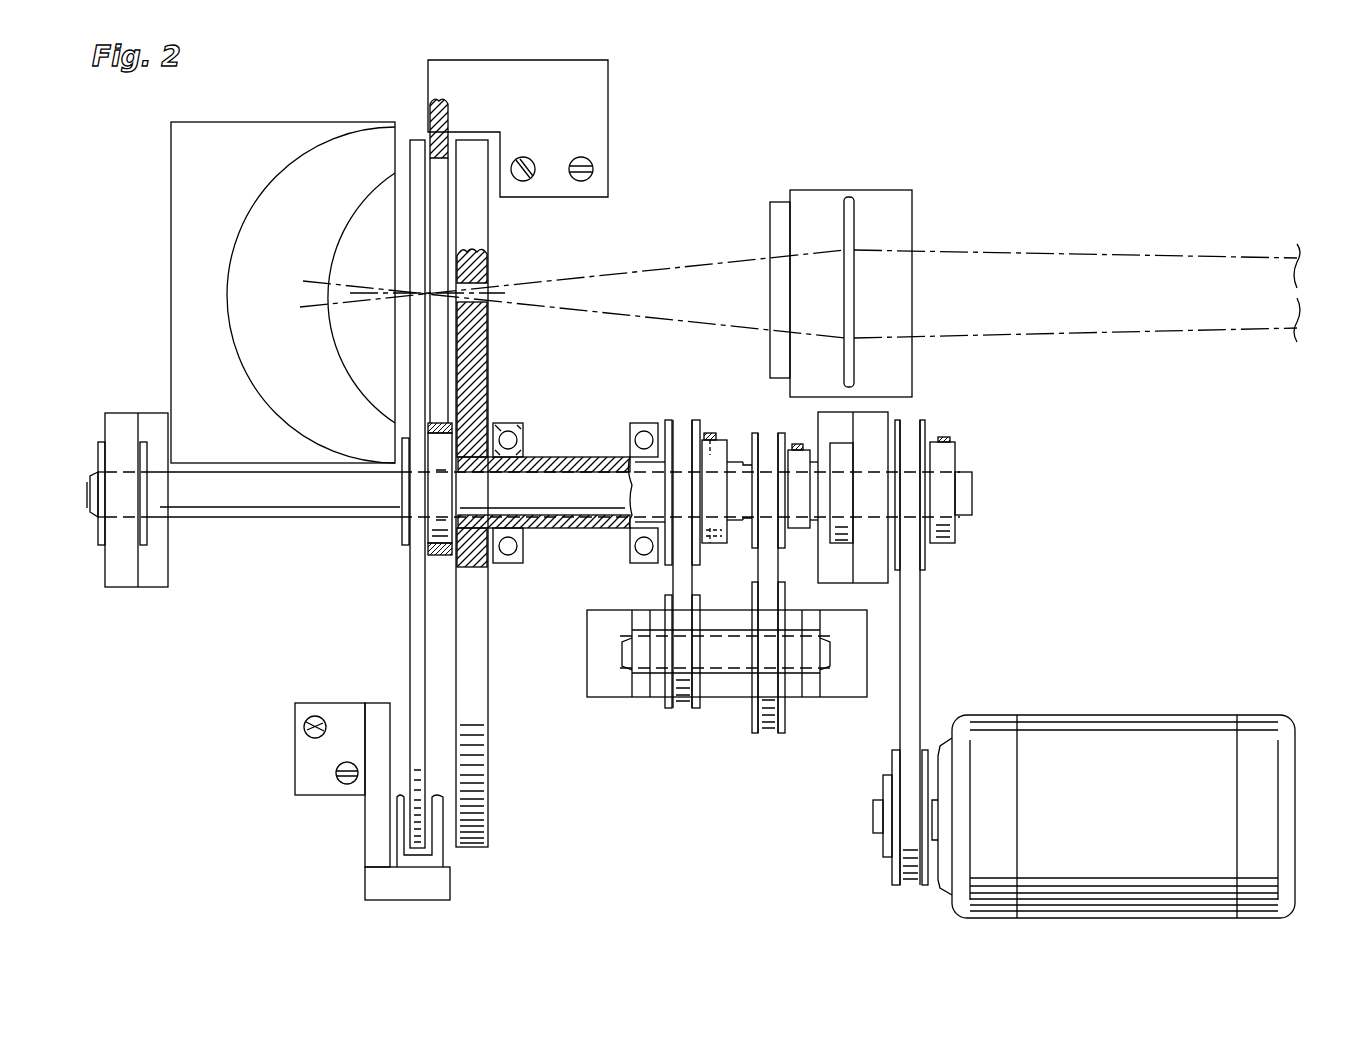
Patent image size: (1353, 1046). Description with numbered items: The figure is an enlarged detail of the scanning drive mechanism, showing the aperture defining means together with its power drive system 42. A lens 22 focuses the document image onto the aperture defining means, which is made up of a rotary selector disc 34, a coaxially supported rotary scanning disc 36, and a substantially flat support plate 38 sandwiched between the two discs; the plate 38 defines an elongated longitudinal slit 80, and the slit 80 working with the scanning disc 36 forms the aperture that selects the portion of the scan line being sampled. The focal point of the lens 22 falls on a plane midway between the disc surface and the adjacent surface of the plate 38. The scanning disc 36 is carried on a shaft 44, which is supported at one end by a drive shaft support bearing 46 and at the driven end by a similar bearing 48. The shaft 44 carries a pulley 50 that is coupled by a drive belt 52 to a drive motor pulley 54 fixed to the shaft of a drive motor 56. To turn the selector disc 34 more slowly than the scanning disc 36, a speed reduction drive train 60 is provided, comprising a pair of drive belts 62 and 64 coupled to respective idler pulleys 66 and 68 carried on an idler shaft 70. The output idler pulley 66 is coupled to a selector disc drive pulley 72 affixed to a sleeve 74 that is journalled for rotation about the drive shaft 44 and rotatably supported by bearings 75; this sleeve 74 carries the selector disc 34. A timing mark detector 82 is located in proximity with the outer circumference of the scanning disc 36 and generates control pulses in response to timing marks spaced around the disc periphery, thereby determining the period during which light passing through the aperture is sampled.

The lens 22 is at (875, 190).
The rotary selector disc 34 is at (494, 493).
The rotary scanning disc 36 is at (410, 633).
The support plate 38 is at (438, 122).
The power drive system 42 is at (1056, 645).
The shaft 44 is at (292, 513).
The drive shaft support bearing 46 is at (140, 588).
The bearing 48 is at (885, 412).
The pulley 50 is at (925, 430).
The drive belt 52 is at (922, 632).
The drive motor pulley 54 is at (883, 850).
The drive motor 56 is at (1113, 816).
The speed reduction drive train 60 is at (727, 631).
The drive belt 62 is at (672, 574).
The drive belt 64 is at (762, 562).
The idler pulley 66 is at (668, 710).
The idler pulley 68 is at (780, 735).
The idler shaft 70 is at (733, 690).
The selector disc drive pulley 72 is at (658, 428).
The sleeve 74 is at (553, 535).
The bearings 75 is at (520, 433).
The elongated longitudinal slit 80 is at (443, 353).
The timing mark detector 82 is at (372, 852).